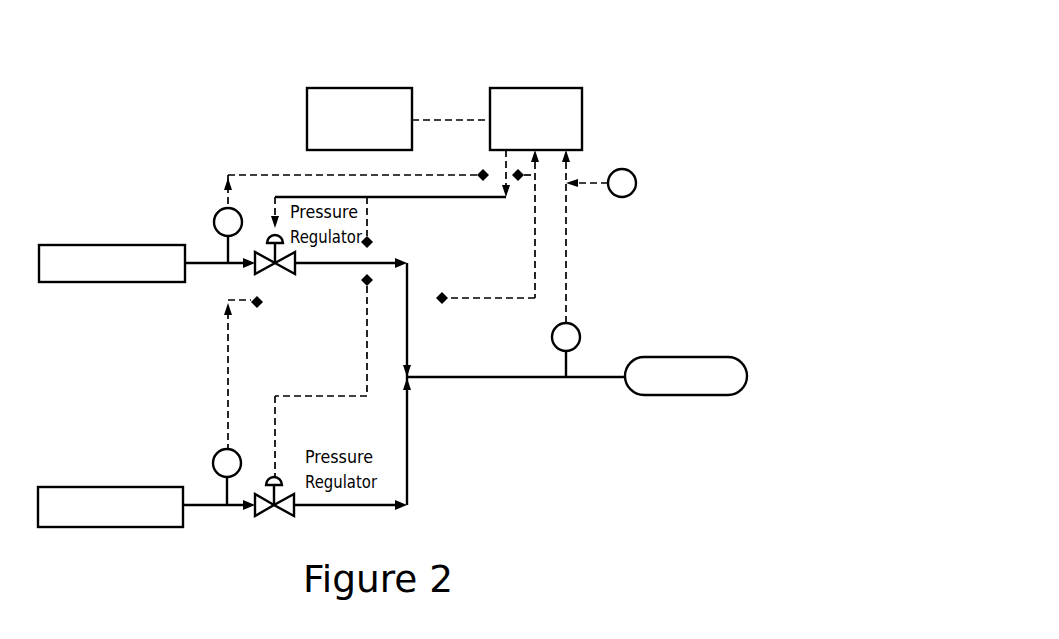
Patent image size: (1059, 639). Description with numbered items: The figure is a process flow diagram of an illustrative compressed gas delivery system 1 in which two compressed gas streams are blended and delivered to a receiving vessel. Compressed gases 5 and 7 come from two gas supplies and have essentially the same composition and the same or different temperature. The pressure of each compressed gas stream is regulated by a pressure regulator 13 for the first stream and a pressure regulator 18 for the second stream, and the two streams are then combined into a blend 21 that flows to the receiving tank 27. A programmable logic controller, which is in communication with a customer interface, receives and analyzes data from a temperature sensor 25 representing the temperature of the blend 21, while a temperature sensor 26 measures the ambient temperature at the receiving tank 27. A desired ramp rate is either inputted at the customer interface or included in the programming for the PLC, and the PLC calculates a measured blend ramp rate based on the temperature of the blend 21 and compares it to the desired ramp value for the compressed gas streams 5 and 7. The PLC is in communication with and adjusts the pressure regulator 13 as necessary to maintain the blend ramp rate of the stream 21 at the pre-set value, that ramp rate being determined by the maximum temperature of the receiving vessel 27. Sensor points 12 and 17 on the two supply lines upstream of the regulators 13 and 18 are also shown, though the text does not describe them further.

The compressed gas delivery system 1 is at (663, 42).
The compressed gas 5 is at (117, 282).
The compressed gas 7 is at (108, 527).
The temperature sensor for gas supply 1 12 is at (246, 300).
The pressure regulator 13 is at (275, 275).
The temperature sensor for gas supply 2 17 is at (224, 490).
The pressure regulator 18 is at (274, 517).
The blend 21 is at (502, 378).
The temperature sensor 25 is at (566, 362).
The temperature sensor 26 is at (636, 186).
The receiving tank 27 is at (687, 395).